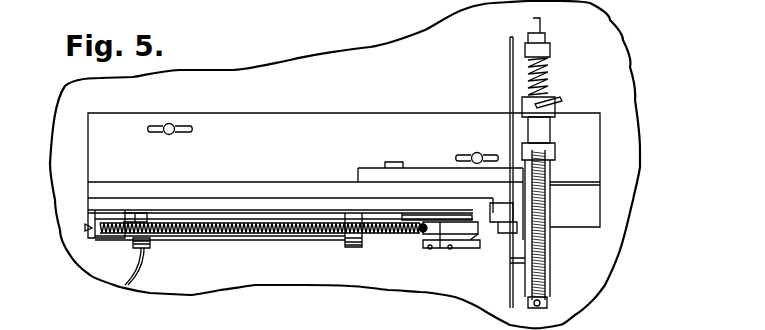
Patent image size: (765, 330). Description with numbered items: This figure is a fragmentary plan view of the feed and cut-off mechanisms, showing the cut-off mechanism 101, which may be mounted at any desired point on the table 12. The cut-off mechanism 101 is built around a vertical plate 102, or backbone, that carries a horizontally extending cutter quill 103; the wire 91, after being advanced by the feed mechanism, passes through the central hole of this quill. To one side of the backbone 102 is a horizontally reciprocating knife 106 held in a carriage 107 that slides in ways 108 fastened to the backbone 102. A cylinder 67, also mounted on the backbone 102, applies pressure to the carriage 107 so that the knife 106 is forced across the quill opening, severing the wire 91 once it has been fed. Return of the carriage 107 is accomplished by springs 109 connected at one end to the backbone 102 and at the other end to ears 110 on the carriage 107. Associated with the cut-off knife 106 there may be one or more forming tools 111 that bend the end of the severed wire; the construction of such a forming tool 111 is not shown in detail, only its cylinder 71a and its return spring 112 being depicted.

The table 12 is at (592, 285).
The cylinder 67 is at (293, 233).
The lever 71a is at (548, 130).
The wire 91 is at (510, 100).
The cut-off mechanism 101 is at (253, 205).
The vertical plate 102 is at (298, 185).
The cutter quill 103 is at (508, 228).
The horizontally reciprocating knife 106 is at (467, 248).
The carriage 107 is at (440, 234).
The ways 108 is at (435, 213).
The springs 109 is at (395, 235).
The ears 110 is at (420, 233).
The forming tool 111 is at (522, 256).
The return spring 112 is at (542, 193).